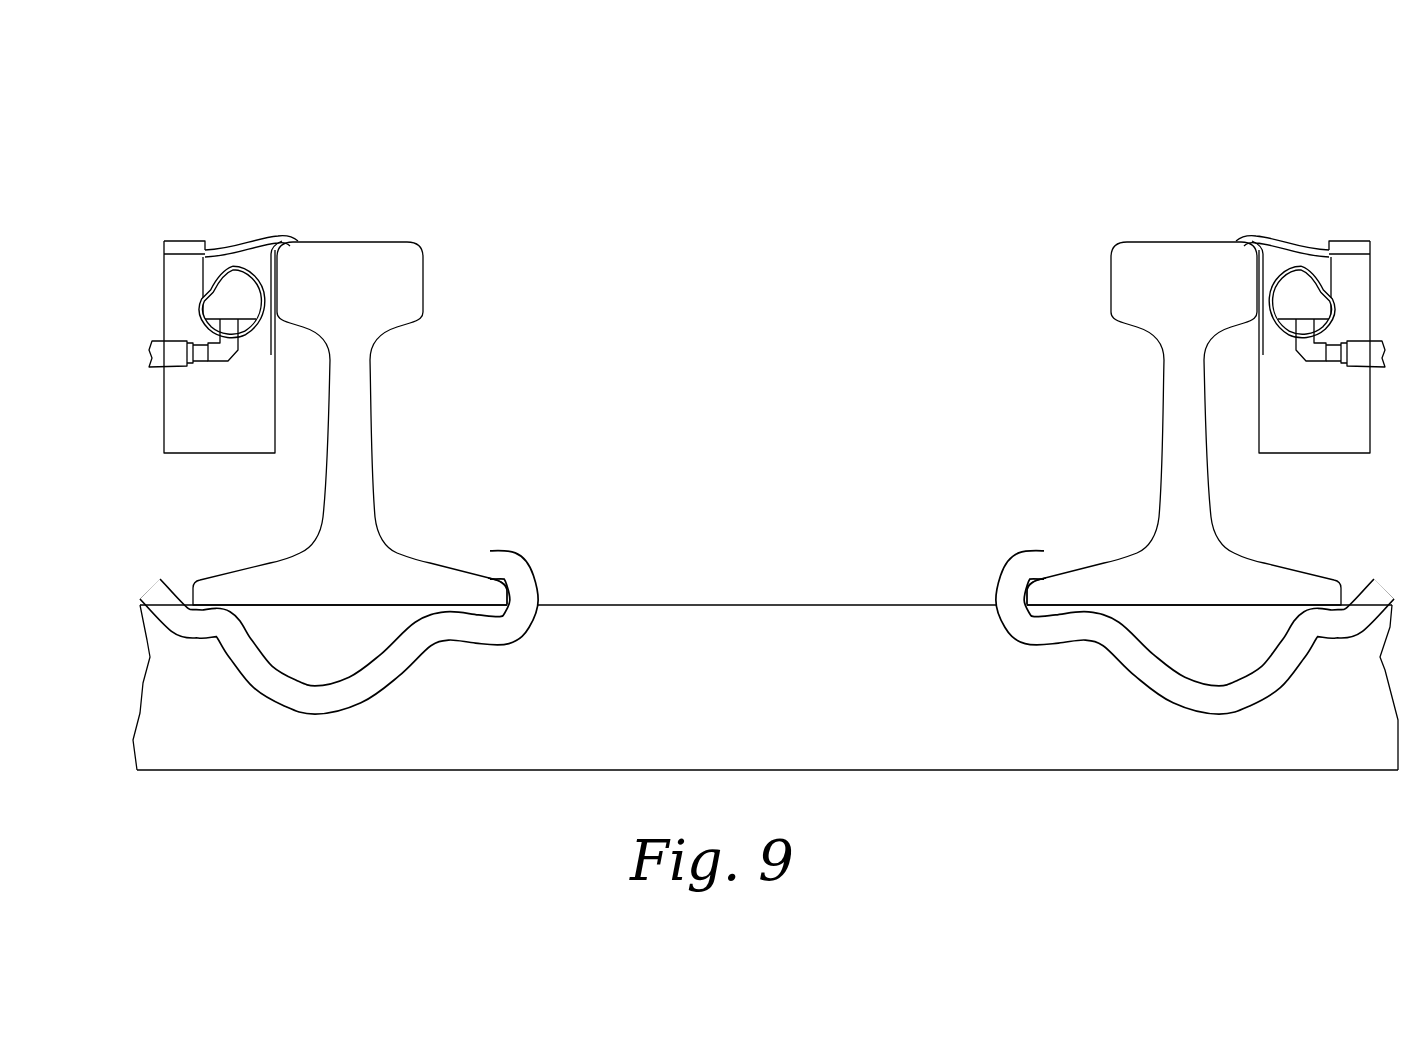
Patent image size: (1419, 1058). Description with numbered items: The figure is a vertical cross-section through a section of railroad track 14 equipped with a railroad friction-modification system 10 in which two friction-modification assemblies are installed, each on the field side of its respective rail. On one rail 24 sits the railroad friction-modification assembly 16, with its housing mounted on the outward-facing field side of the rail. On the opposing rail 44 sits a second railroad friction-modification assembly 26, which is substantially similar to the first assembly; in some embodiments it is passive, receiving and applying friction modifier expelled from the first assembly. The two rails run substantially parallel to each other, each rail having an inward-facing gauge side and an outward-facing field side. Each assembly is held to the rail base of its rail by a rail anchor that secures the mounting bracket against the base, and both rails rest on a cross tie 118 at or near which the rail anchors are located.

The railroad friction-modification system 10 is at (245, 94).
The section of railroad track 14 is at (951, 167).
The railroad friction-modification assembly 16 is at (1325, 286).
The rail 24 is at (1159, 392).
The second railroad friction-modification assembly 26 is at (214, 285).
The opposing rail 44 is at (343, 390).
The cross tie 118 is at (913, 753).